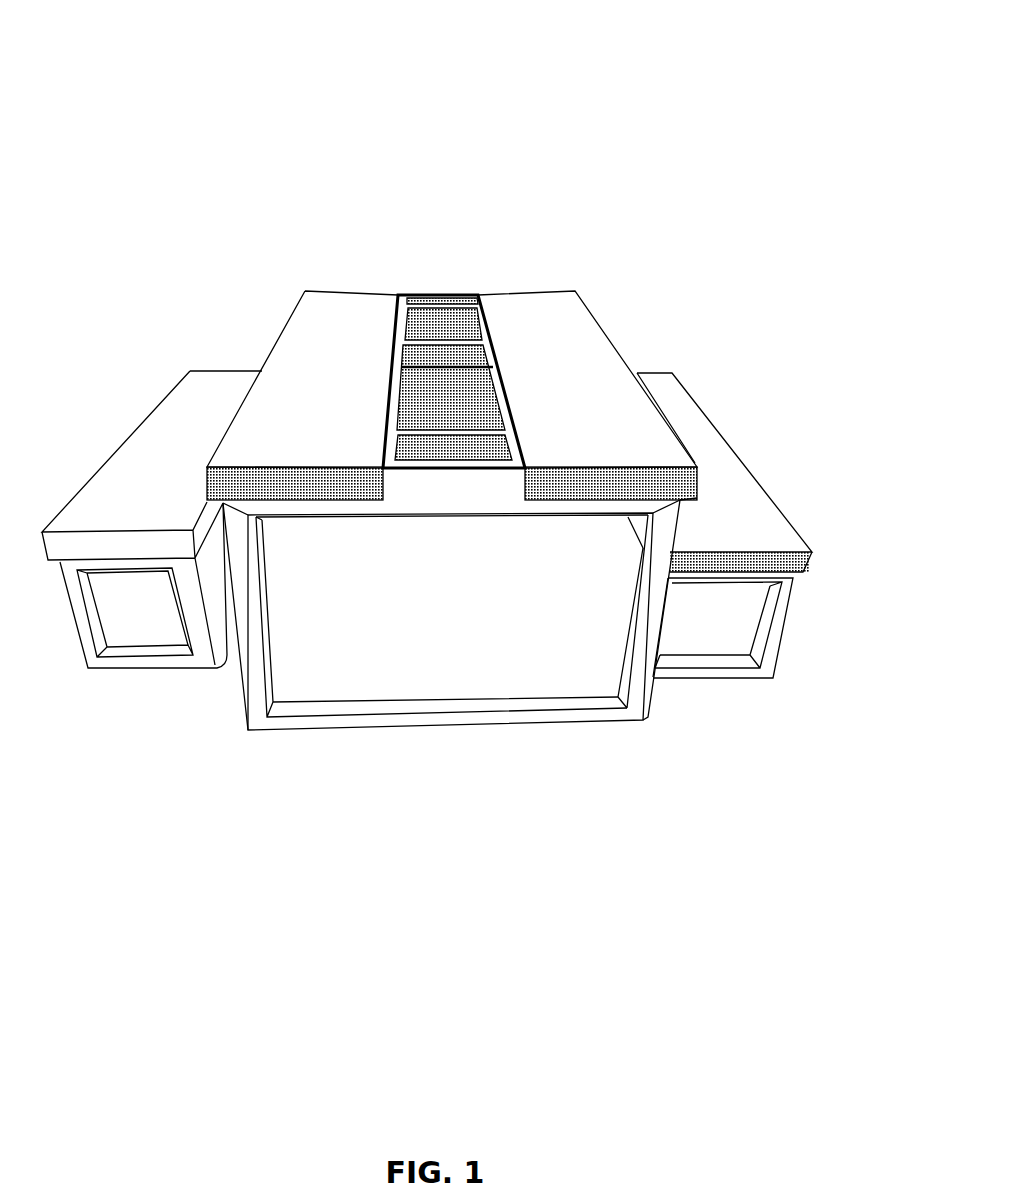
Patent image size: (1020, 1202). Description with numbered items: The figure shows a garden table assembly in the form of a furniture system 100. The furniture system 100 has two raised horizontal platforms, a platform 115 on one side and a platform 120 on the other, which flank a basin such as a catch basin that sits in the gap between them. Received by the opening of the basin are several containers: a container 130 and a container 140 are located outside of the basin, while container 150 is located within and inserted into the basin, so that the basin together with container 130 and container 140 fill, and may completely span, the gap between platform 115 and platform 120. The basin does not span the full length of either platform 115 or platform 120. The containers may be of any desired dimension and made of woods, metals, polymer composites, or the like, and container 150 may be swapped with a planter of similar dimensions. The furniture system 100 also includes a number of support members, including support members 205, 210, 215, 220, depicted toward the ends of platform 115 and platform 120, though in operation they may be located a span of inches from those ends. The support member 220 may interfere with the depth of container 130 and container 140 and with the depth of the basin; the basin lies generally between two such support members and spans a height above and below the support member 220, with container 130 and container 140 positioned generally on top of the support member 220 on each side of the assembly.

The furniture system 100 is at (600, 80).
The platform 115 is at (303, 347).
The platform 120 is at (603, 387).
The container 130 is at (425, 293).
The container 150 is at (448, 322).
The container 140 is at (472, 445).
The support member 205 is at (253, 685).
The support member 210 is at (638, 688).
The support member 215 is at (447, 718).
The support member 220 is at (447, 505).